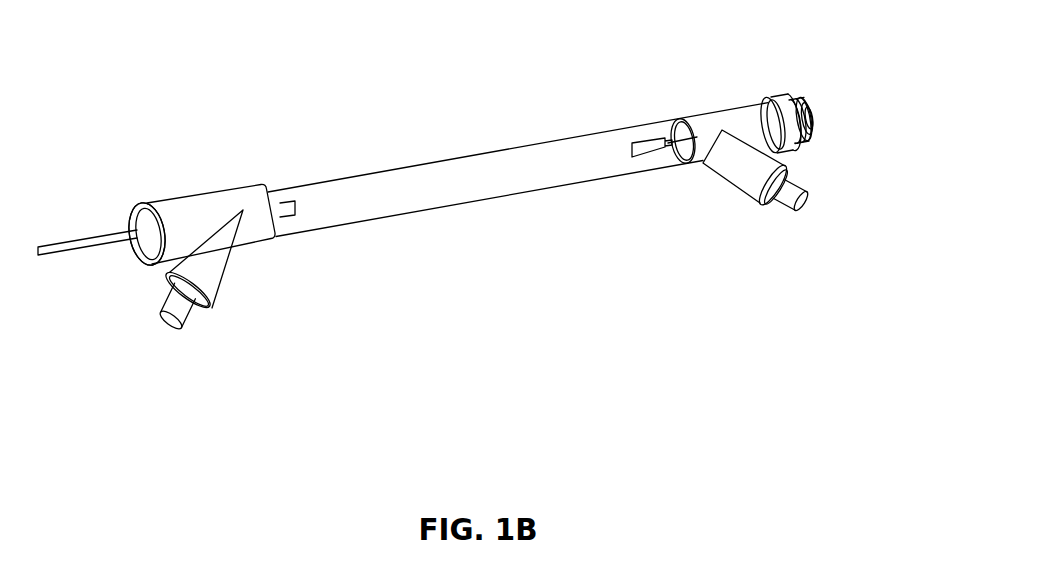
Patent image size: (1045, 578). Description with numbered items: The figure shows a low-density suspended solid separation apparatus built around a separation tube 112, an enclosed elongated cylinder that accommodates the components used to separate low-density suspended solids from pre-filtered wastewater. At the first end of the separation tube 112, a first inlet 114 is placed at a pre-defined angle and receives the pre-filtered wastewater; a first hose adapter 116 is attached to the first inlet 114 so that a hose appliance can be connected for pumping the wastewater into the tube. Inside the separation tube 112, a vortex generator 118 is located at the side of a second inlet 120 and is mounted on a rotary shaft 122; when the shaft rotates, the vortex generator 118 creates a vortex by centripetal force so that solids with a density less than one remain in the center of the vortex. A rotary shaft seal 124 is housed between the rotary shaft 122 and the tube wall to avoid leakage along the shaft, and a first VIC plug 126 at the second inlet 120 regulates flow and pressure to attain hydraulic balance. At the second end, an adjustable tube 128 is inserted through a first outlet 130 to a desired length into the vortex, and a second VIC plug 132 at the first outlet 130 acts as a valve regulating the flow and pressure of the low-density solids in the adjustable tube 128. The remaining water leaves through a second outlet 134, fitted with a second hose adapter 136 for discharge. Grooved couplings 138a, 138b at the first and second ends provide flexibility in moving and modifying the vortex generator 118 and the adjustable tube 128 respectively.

The separation tube 112 is at (354, 229).
The first inlet 114 is at (700, 166).
The first hose adapter 116 is at (791, 216).
The vortex generator 118 is at (624, 137).
The second inlet 120 is at (806, 110).
The rotary shaft 122 is at (809, 122).
The rotary shaft seal 124 is at (804, 131).
The first VIC plug 126 is at (801, 101).
The adjustable tube 128 is at (90, 232).
The first outlet 130 is at (128, 200).
The second VIC plug 132 is at (127, 250).
The second outlet 134 is at (253, 241).
The second hose adapter 136 is at (191, 327).
The grooved coupling 138a is at (781, 98).
The grooved coupling 138b is at (152, 197).